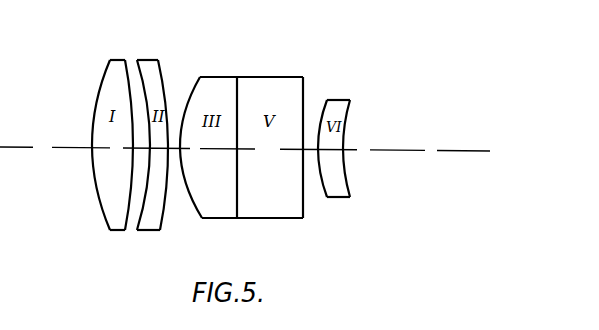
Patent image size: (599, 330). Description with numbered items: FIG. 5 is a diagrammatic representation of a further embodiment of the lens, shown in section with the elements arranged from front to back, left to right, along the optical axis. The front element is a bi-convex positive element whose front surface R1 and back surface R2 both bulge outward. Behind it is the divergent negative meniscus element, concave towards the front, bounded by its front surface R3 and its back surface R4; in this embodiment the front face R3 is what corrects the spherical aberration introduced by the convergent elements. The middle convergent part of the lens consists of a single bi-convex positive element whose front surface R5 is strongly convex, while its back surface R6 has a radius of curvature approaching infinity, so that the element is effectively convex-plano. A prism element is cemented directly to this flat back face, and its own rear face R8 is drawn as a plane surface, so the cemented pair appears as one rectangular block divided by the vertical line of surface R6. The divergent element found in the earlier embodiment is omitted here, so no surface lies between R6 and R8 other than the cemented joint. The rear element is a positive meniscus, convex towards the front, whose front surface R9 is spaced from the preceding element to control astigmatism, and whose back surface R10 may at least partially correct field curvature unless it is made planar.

The front surface of element I R1 is at (103, 78).
The back surface of element I R2 is at (128, 73).
The front surface of element II R3 is at (134, 231).
The back surface of element II R4 is at (160, 231).
The front surface of element III R5 is at (197, 79).
The back surface of element III R6 is at (241, 84).
The back surface of prism element V R8 is at (304, 216).
The front surface of element VI R9 is at (320, 103).
The back surface of element VI R10 is at (348, 117).